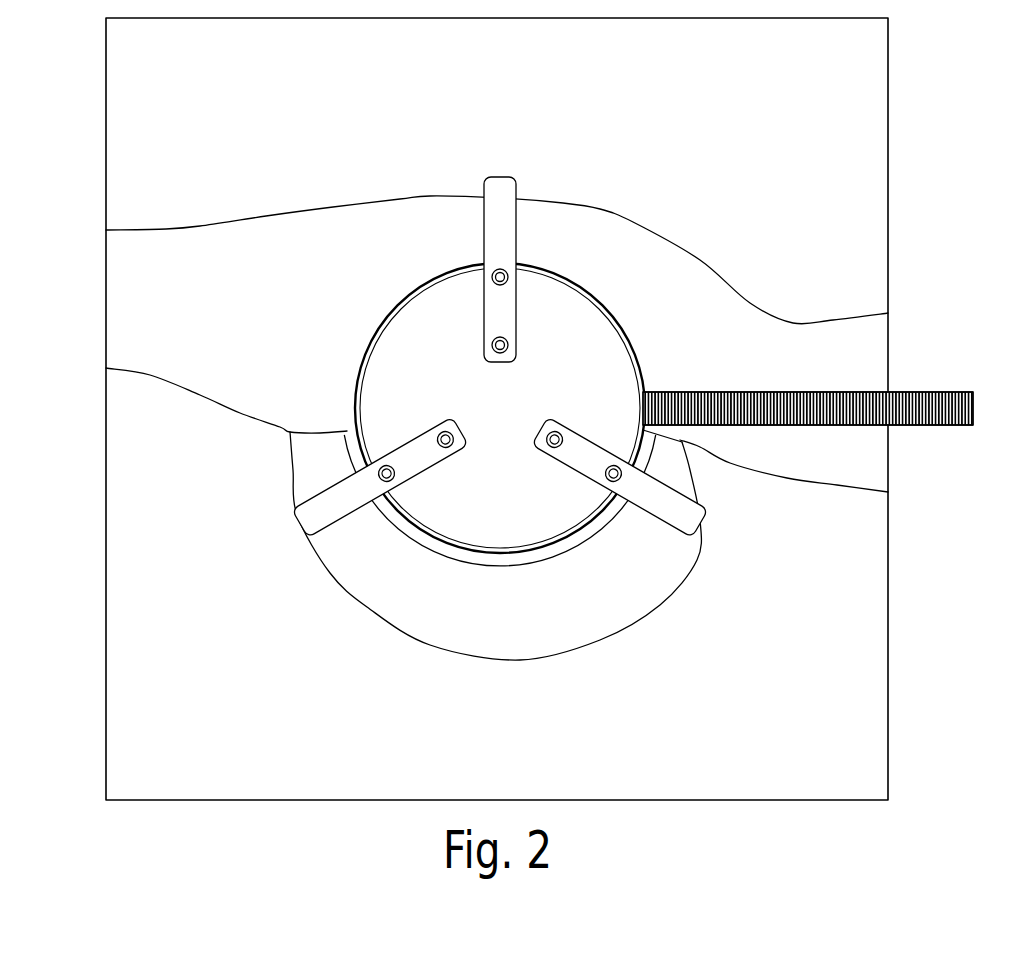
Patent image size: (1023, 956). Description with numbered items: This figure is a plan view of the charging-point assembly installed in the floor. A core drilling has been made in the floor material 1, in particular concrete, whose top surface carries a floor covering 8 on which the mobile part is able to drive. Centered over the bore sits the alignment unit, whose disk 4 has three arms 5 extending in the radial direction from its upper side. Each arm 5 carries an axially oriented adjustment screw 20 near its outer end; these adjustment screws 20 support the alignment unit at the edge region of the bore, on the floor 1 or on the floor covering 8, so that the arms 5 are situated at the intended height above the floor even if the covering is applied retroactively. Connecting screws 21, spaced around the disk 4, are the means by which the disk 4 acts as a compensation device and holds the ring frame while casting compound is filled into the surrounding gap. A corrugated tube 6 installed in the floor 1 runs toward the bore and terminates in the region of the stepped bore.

The floor material 1 is at (614, 598).
The disk 4 is at (573, 363).
The arms 5 is at (497, 242).
The corrugated tube 6 is at (935, 420).
The floor covering 8 is at (838, 598).
The adjustment screws 20 is at (500, 193).
The connecting screws 21 is at (365, 408).